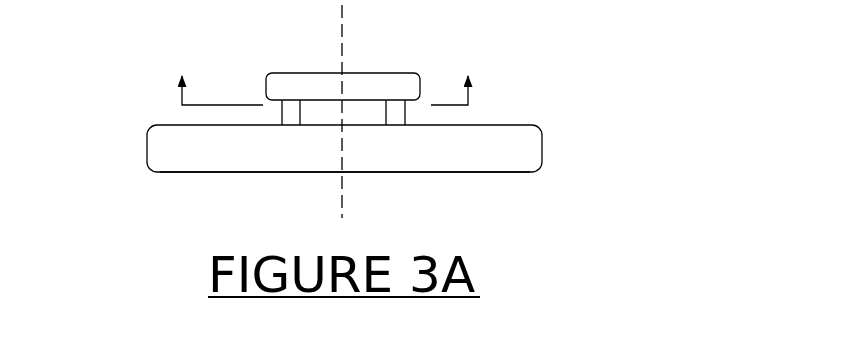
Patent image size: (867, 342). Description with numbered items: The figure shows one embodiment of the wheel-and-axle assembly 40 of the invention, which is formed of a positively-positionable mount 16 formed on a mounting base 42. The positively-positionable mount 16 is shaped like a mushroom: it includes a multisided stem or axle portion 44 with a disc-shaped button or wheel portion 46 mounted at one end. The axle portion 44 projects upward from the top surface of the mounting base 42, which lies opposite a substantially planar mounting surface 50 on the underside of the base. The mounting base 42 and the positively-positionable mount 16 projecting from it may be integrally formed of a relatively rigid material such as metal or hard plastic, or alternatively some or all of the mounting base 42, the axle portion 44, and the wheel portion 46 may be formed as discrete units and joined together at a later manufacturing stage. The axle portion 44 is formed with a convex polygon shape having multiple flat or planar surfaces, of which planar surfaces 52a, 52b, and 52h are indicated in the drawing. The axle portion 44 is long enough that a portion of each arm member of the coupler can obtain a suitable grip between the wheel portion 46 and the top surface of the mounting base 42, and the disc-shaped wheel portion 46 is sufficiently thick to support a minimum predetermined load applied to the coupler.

The positively-positionable mount 16 is at (246, 53).
The wheel-and-axle assembly 40 is at (537, 89).
The mounting base 42 is at (549, 129).
The axle portion 44 is at (409, 112).
The wheel portion 46 is at (409, 68).
The mounting surface 50 is at (519, 174).
The planar surface 52a is at (324, 113).
The planar surface 52b is at (368, 112).
The planar surface 52h is at (276, 115).